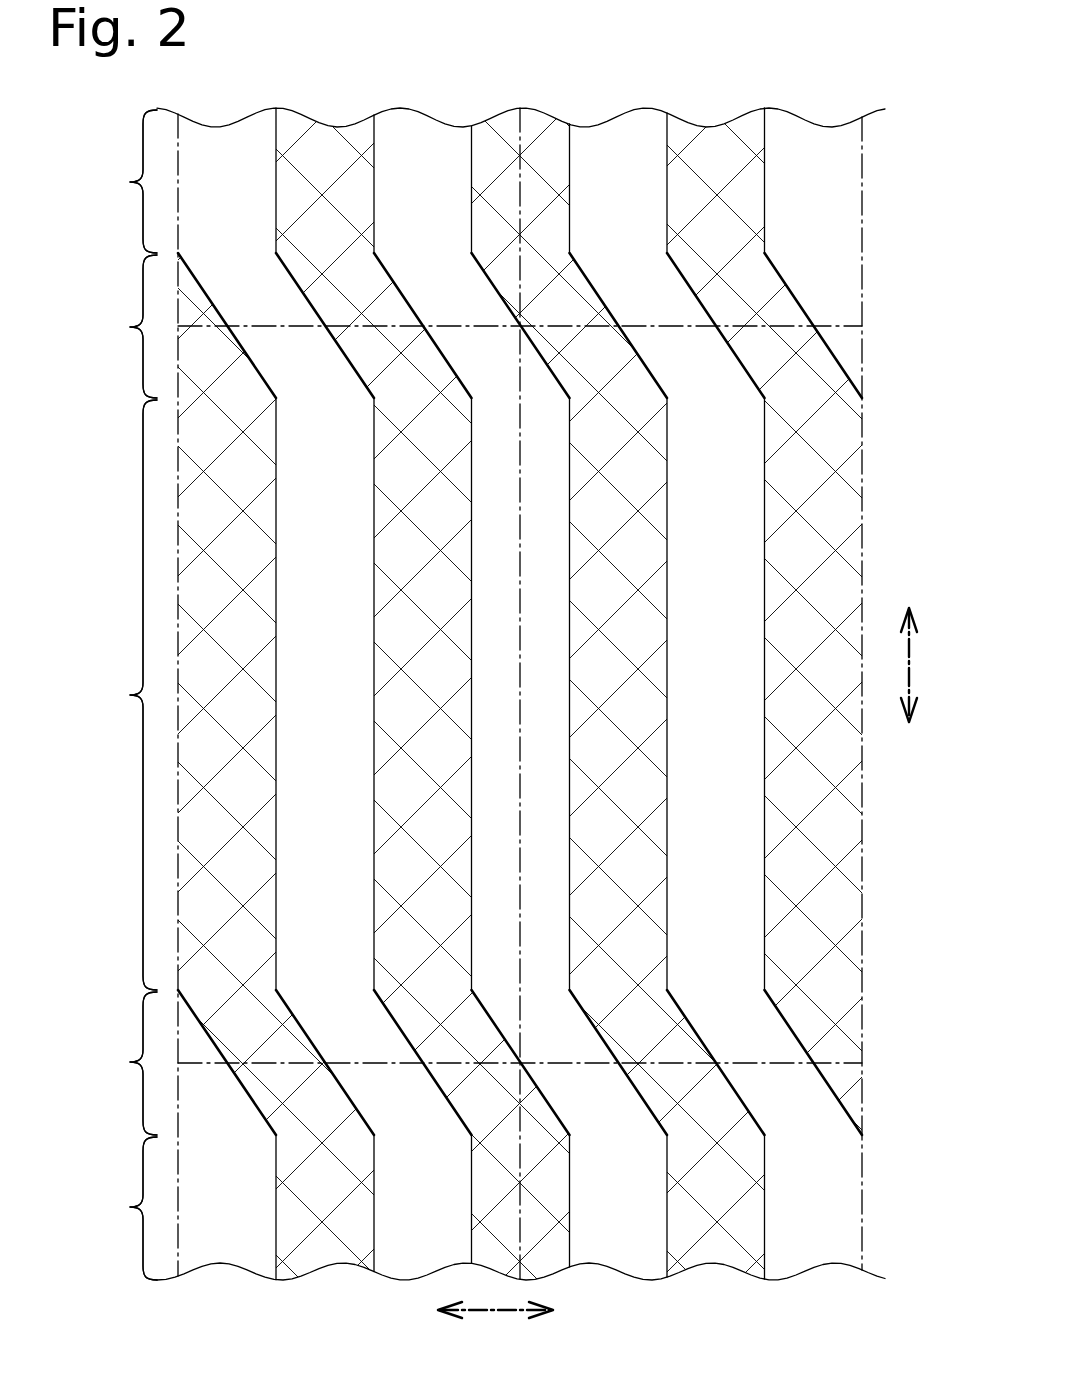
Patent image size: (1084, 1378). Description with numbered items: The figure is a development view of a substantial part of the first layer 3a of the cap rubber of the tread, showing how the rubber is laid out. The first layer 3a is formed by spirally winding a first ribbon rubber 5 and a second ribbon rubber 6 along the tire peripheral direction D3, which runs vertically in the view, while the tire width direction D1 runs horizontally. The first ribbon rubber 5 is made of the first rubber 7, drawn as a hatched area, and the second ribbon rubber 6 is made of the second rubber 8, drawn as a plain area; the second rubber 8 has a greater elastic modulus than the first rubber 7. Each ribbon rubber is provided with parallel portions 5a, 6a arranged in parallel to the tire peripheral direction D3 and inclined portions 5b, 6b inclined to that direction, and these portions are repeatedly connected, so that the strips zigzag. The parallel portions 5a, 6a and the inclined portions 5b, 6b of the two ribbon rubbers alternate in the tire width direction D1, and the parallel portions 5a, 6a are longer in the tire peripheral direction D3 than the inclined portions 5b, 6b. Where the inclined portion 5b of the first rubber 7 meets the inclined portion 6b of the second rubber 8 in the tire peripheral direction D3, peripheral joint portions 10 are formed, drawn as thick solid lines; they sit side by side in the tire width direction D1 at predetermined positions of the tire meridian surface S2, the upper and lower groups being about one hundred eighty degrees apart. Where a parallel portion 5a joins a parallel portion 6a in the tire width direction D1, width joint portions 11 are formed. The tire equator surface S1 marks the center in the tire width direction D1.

The first layer 3a is at (852, 510).
The first ribbon rubber 5 is at (334, 134).
The second ribbon rubber 6 is at (230, 134).
The parallel portion 5a is at (113, 695).
The parallel portion 6a is at (129, 695).
The inclined portion 5b is at (113, 695).
The inclined portion 6b is at (129, 695).
The first rubber 7 is at (325, 1244).
The second rubber 8 is at (229, 1244).
The peripheral joint portion 10 is at (343, 352).
The width joint portion 11 is at (277, 548).
The tire equator surface S1 is at (498, 116).
The tire meridian surface S2 is at (840, 323).
The tire width direction D1 is at (495, 1321).
The tire peripheral direction D3 is at (925, 665).